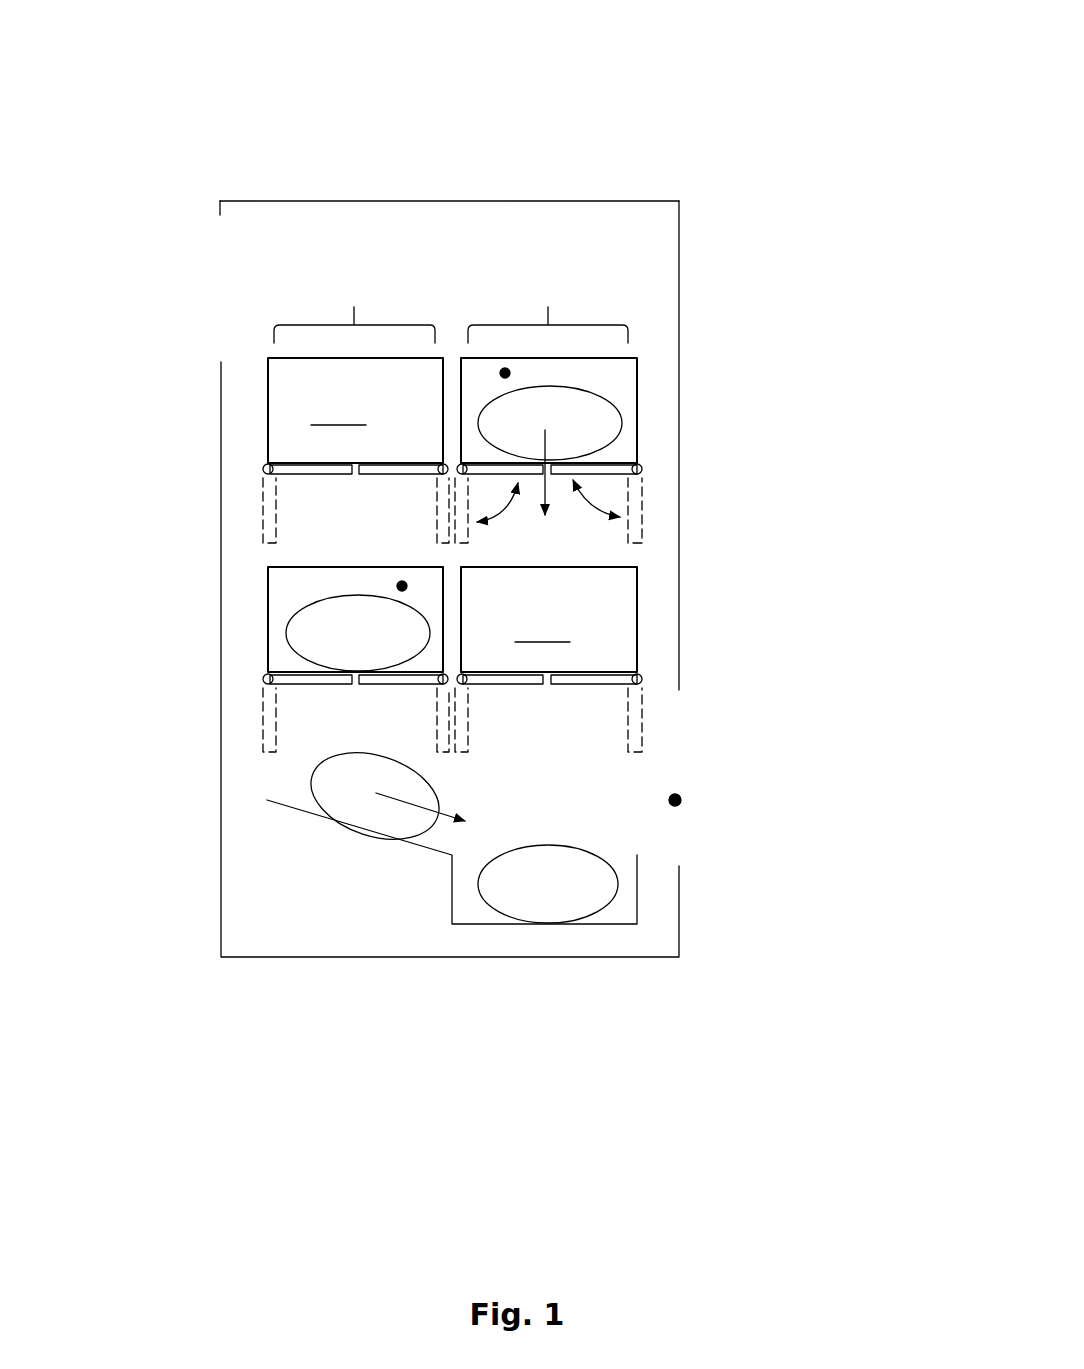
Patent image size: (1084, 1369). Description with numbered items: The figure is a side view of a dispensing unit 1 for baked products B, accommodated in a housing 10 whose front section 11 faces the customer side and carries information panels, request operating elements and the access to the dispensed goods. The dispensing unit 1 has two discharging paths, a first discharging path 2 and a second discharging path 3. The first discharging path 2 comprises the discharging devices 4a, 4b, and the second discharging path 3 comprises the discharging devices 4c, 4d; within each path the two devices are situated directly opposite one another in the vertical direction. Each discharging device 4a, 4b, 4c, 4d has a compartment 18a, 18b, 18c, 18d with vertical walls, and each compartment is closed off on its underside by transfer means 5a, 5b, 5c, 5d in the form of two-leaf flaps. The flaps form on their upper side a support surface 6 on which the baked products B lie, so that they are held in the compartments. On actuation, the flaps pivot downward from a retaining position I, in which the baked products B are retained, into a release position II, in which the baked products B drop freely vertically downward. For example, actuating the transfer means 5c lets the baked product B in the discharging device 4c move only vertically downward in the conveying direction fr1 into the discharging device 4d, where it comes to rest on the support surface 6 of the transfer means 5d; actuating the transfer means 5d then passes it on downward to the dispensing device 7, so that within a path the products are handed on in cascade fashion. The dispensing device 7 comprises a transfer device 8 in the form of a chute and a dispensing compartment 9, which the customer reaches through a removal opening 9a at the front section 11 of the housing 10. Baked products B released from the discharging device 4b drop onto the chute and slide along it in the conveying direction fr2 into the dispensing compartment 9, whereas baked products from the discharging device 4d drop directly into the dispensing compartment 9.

The dispensing unit 1 is at (541, 478).
The first discharging path 2 is at (288, 426).
The second discharging path 3 is at (569, 598).
The first discharging device 4a is at (268, 428).
The second discharging device 4b is at (268, 635).
The first discharging device 4c is at (637, 430).
The second discharging device 4d is at (635, 648).
The transfer means 5a is at (295, 477).
The transfer means 5b is at (297, 685).
The transfer means 5c is at (607, 478).
The transfer means 5d is at (592, 687).
The support surface 6 is at (383, 447).
The dispensing device 7 is at (738, 822).
The transfer device 8 is at (284, 807).
The dispensing compartment 9 is at (611, 924).
The removal opening 9a is at (675, 800).
The housing 10 is at (563, 198).
The front section 11 is at (679, 283).
The compartment 18a is at (338, 410).
The compartment 18b is at (402, 586).
The compartment 18c is at (505, 373).
The compartment 18d is at (541, 627).
The conveying direction fr1 is at (560, 437).
The conveying direction fr2 is at (405, 804).
The baked product B is at (598, 430).
The retaining position I is at (573, 491).
The release position II is at (494, 517).